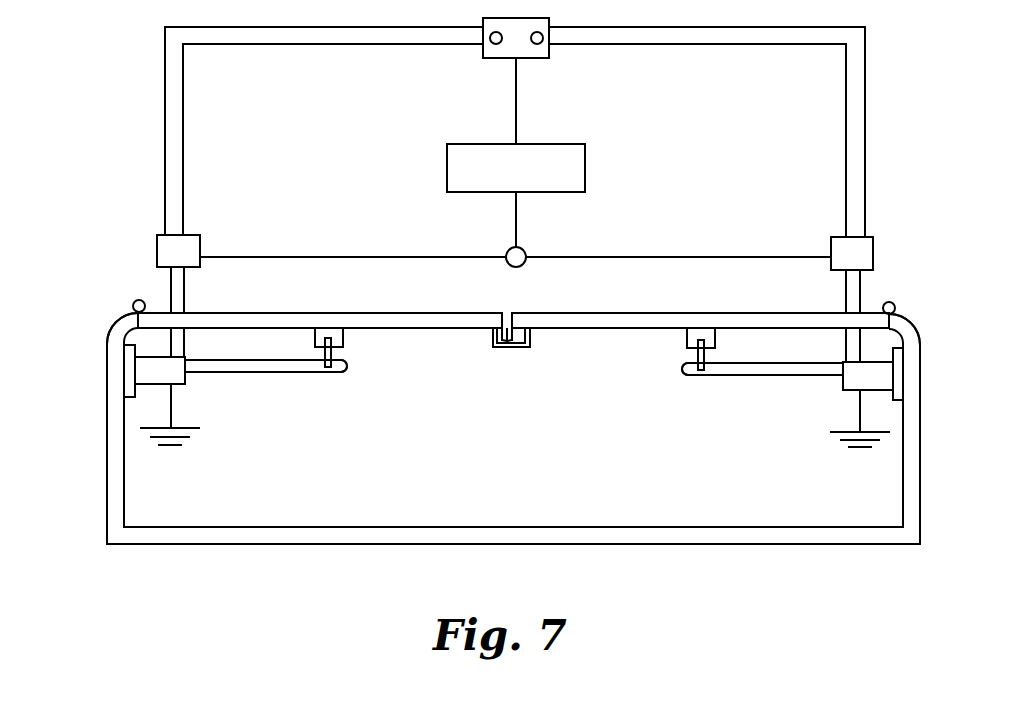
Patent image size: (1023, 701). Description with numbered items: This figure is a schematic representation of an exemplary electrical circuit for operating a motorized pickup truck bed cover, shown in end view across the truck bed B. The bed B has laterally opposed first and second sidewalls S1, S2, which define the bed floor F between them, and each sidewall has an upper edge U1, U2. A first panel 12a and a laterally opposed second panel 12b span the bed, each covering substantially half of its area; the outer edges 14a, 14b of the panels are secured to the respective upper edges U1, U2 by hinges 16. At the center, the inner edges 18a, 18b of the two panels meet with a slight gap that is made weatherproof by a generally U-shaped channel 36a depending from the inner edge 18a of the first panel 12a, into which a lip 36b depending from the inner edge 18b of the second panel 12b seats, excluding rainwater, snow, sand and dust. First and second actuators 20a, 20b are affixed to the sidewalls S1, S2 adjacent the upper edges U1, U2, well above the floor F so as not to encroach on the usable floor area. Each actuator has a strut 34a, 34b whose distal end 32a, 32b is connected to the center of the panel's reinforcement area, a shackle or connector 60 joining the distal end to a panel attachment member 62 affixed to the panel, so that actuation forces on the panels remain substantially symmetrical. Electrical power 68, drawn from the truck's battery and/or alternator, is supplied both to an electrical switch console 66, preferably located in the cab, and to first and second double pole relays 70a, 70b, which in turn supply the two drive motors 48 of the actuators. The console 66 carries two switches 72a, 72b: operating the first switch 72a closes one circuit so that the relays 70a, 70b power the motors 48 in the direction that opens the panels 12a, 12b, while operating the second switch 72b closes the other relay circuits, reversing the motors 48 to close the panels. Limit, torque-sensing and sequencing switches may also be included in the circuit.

The first panel 12a is at (373, 312).
The second panel 12b is at (640, 312).
The outer edge of first panel 14a is at (119, 346).
The outer edge of second panel 14b is at (905, 336).
The hinges 16 is at (133, 304).
The inner edge of first panel 18a is at (502, 312).
The inner edge of second panel 18b is at (512, 312).
The first actuator 20a is at (225, 390).
The second actuator 20b is at (827, 399).
The distal end of first actuator strut 32a is at (334, 373).
The distal end of second actuator strut 32b is at (685, 376).
The first actuator strut 34a is at (276, 373).
The second actuator strut assembly 34b is at (737, 375).
The U-shaped channel 36a is at (508, 348).
The lip 36b is at (515, 348).
The drive motors 48 is at (184, 386).
The shackle 60 is at (331, 357).
The panel attachment member 62 is at (315, 340).
The electrical switch console 66 is at (483, 57).
The electrical power source 68 is at (447, 172).
The first double pole relay 70a is at (157, 250).
The second double pole relay 70b is at (873, 240).
The first switch 72a is at (497, 45).
The second switch 72b is at (537, 45).
The bed B is at (300, 566).
The bed floor F is at (514, 527).
The first sidewall S1 is at (107, 470).
The second sidewall S2 is at (920, 487).
The first upper edge U1 is at (111, 329).
The second upper edge U2 is at (918, 326).